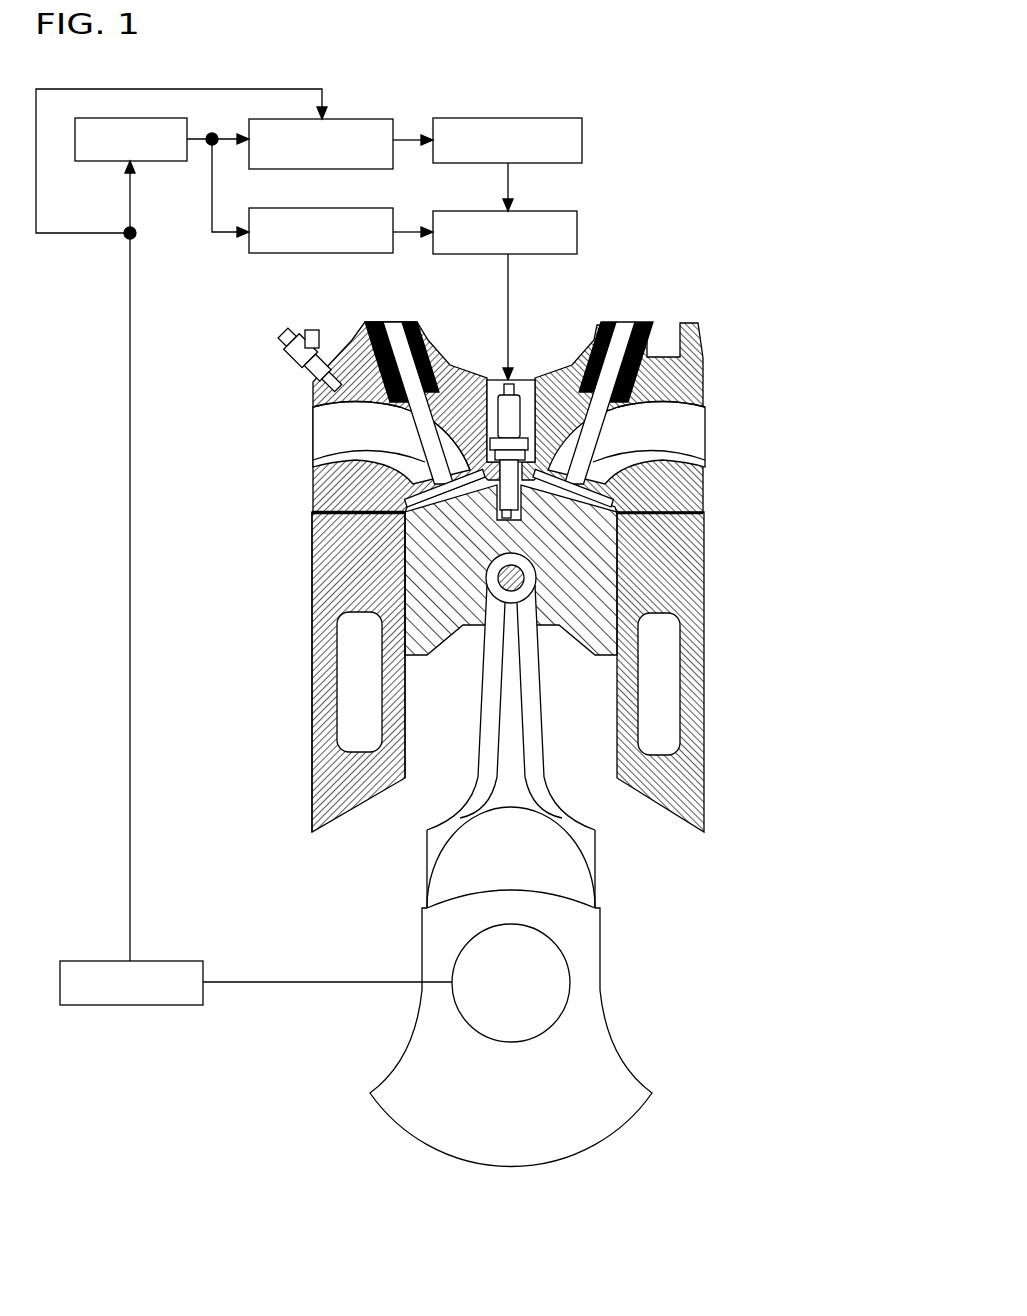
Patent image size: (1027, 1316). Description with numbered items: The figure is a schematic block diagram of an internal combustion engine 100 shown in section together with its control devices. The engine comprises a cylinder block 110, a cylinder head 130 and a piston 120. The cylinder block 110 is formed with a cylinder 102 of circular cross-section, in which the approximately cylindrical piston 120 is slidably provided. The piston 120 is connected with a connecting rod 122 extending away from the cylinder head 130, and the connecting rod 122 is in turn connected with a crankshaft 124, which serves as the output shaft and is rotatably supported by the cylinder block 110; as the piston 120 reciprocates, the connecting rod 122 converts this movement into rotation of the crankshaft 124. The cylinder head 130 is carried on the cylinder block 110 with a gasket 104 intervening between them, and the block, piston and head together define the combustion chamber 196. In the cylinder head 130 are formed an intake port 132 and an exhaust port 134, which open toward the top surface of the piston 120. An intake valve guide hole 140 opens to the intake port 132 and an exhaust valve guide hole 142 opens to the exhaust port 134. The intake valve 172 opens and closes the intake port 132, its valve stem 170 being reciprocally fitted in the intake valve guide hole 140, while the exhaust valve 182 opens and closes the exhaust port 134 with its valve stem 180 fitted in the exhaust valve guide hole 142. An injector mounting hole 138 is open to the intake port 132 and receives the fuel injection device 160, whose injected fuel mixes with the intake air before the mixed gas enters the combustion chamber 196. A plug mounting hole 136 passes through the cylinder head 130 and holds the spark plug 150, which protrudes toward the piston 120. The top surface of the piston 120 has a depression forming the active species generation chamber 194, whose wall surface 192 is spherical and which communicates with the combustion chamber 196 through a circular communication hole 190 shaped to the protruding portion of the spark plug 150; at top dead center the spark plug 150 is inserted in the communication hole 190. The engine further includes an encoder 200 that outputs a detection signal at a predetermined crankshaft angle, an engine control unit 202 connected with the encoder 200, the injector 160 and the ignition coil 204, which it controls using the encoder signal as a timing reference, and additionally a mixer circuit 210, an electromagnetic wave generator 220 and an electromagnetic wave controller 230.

The internal combustion engine 100 is at (673, 297).
The cylinder 102 is at (407, 738).
The gasket 104 is at (313, 512).
The cylinder block 110 is at (504, 696).
The piston 120 is at (591, 730).
The connecting rod 122 is at (547, 773).
The crankshaft 124 is at (602, 953).
The cylinder head 130 is at (705, 487).
The intake port 132 is at (355, 460).
The exhaust port 134 is at (680, 448).
The plug mounting hole 136 is at (530, 383).
The injector mounting hole 138 is at (353, 404).
The intake valve guide hole 140 is at (405, 413).
The exhaust valve guide hole 142 is at (610, 417).
The spark plug 150 is at (498, 415).
The fuel injection device 160 is at (285, 362).
The valve stem 170 is at (398, 337).
The intake valve 172 is at (420, 455).
The valve stem 180 is at (627, 322).
The exhaust valve 182 is at (640, 440).
The communication hole 190 is at (317, 552).
The wall surface 192 is at (315, 597).
The active species generation chamber 194 is at (377, 615).
The combustion chamber 196 is at (320, 528).
The encoder 200 is at (165, 961).
The engine control unit 202 is at (120, 118).
The ignition coil 204 is at (322, 208).
The mixer circuit 210 is at (533, 211).
The electromagnetic wave generator 220 is at (533, 118).
The electromagnetic wave controller 230 is at (360, 117).